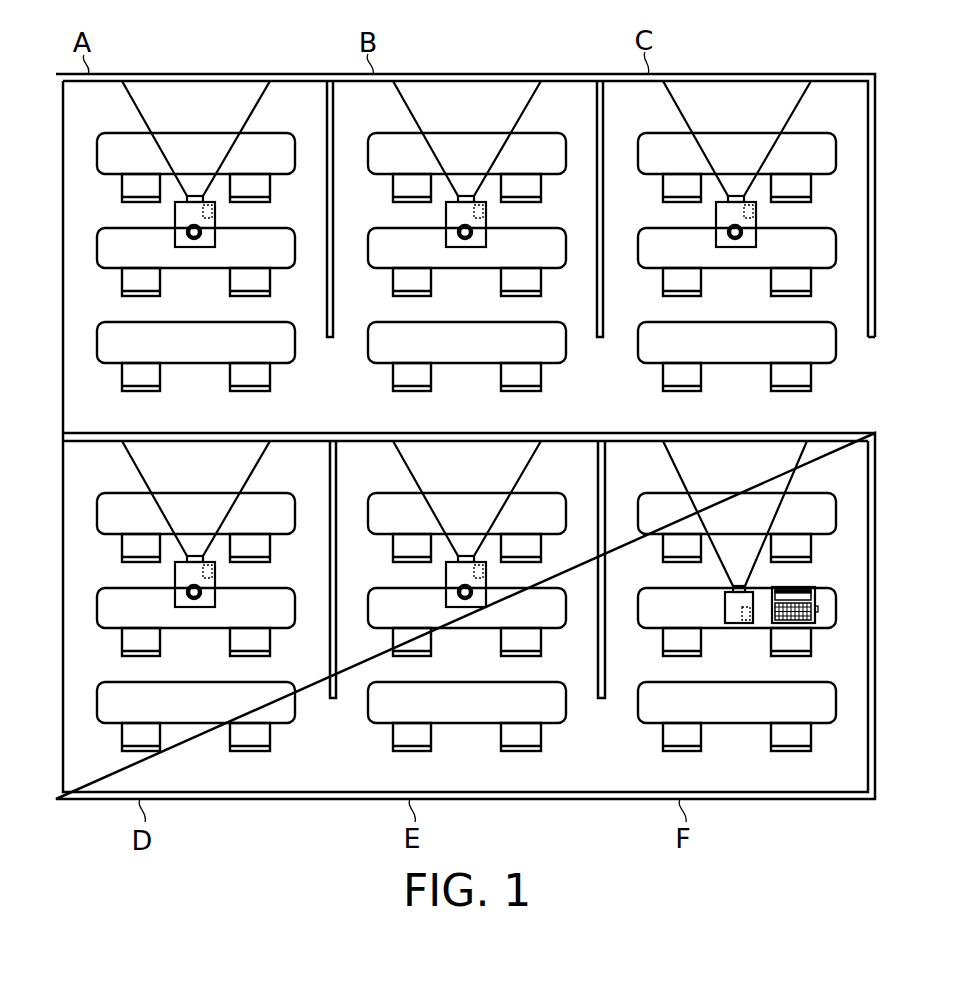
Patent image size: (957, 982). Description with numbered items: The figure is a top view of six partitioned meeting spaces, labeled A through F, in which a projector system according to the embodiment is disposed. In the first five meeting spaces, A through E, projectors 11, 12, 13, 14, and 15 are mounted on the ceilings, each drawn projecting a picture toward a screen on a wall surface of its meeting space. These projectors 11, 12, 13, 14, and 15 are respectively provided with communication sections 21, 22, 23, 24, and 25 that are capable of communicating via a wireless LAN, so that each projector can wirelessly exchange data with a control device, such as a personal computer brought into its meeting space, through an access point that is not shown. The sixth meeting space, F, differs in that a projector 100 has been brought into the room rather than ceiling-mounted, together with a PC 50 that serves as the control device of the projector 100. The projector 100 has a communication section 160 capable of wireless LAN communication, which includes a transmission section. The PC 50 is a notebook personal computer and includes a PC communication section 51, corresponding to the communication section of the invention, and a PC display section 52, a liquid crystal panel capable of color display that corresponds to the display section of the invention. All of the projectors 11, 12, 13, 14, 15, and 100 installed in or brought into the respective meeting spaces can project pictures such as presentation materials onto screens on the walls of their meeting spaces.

The projector 11 is at (215, 239).
The projector 12 is at (522, 246).
The projector 13 is at (792, 246).
The projector 14 is at (251, 606).
The projector 15 is at (522, 606).
The communication section 21 is at (212, 211).
The communication section 22 is at (536, 214).
The communication section 23 is at (806, 214).
The communication section 24 is at (265, 574).
The communication section 25 is at (536, 574).
The PC 50 is at (850, 605).
The PC communication section 51 is at (818, 608).
The PC display section 52 is at (797, 586).
The projector 100 is at (725, 612).
The communication section 160 is at (747, 620).